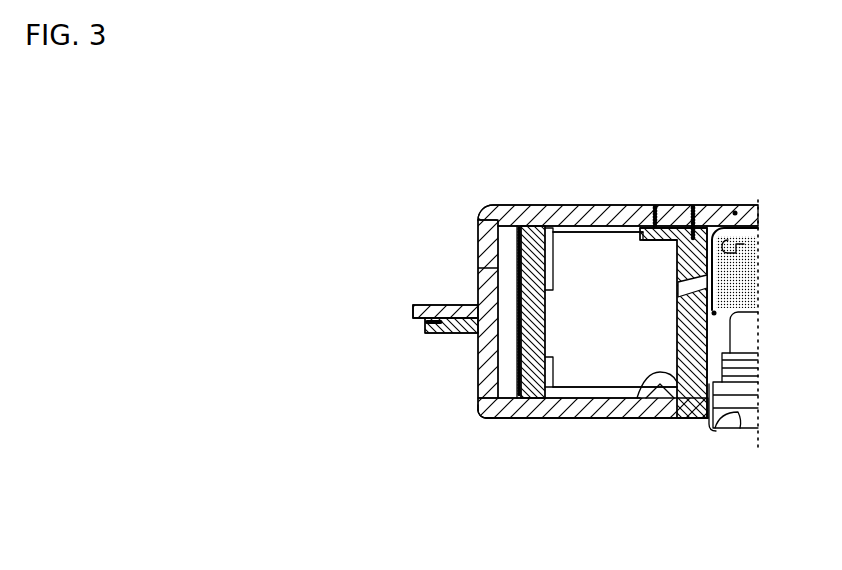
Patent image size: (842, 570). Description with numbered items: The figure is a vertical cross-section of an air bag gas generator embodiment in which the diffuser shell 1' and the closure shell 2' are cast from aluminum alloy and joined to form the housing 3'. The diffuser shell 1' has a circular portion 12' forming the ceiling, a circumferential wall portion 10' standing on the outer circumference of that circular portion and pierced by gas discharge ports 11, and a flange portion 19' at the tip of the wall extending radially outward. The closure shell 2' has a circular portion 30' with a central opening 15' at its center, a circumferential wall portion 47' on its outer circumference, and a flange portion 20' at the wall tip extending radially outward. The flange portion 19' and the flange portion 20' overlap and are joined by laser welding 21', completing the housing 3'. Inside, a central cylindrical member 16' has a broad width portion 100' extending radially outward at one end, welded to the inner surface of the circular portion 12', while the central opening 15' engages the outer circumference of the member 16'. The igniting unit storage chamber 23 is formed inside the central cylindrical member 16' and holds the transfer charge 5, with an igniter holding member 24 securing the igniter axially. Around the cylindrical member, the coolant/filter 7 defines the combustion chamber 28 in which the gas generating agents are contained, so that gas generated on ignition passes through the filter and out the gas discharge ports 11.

The diffuser shell 1' is at (582, 297).
The circular portion 12' is at (618, 174).
The gas discharge ports 11 is at (478, 248).
The closure shell 2' is at (593, 435).
The circular portion 30' is at (592, 449).
The coolant/filter 7 is at (477, 403).
The circumferential wall portion 10' is at (429, 289).
The flange portion 19' is at (379, 295).
The laser welding 21' is at (385, 326).
The flange portion 20' is at (405, 357).
The circumferential wall portion 47' is at (480, 312).
The combustion chamber 28 is at (637, 278).
The broad width portion 100' is at (605, 286).
The transfer charge 5 is at (698, 208).
The housing 3' is at (628, 364).
The central opening 15' is at (674, 379).
The central cylindrical member 16' is at (640, 454).
The igniting unit storage chamber 23 is at (737, 206).
The igniter holding member 24 is at (738, 428).